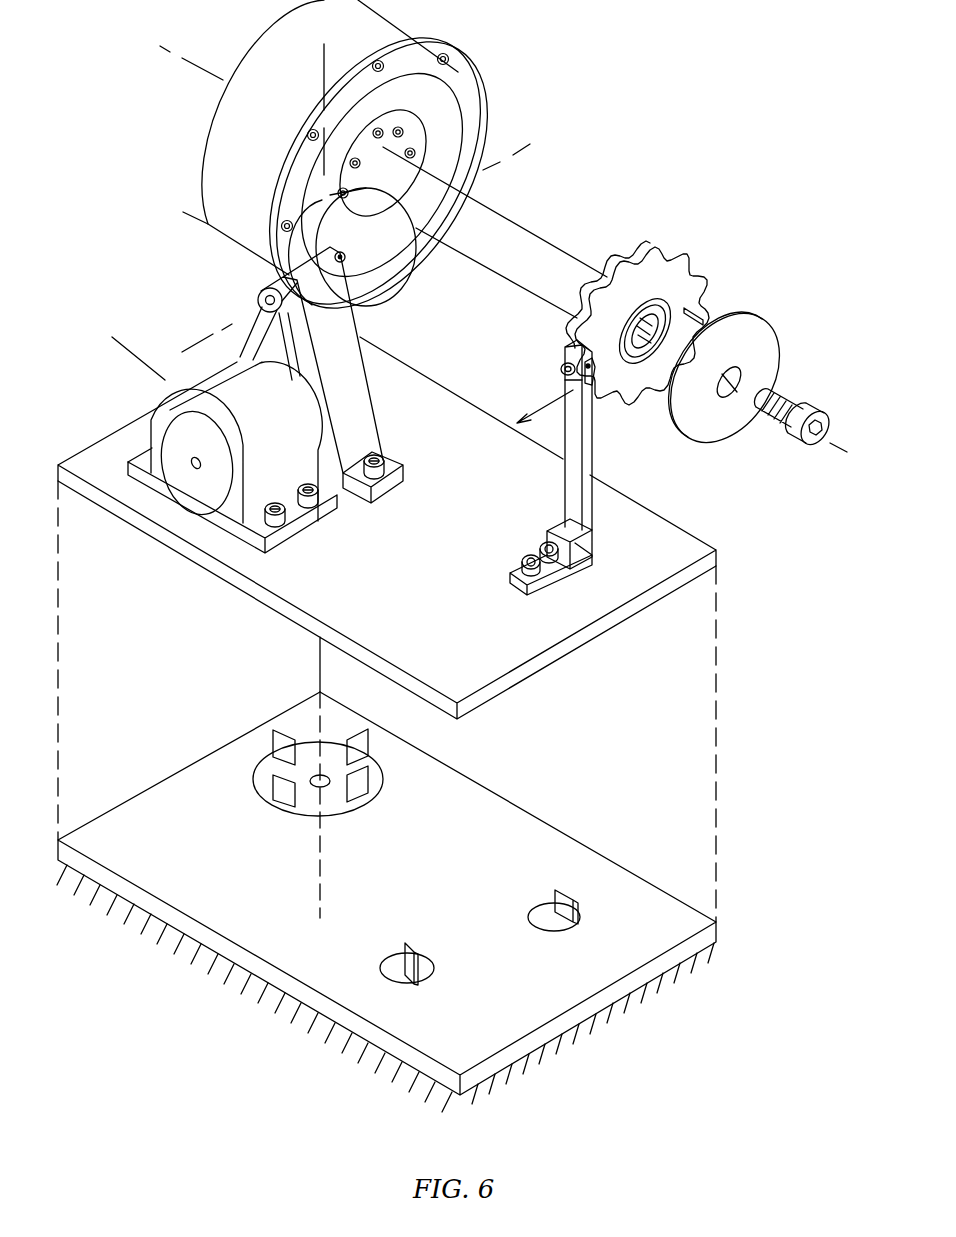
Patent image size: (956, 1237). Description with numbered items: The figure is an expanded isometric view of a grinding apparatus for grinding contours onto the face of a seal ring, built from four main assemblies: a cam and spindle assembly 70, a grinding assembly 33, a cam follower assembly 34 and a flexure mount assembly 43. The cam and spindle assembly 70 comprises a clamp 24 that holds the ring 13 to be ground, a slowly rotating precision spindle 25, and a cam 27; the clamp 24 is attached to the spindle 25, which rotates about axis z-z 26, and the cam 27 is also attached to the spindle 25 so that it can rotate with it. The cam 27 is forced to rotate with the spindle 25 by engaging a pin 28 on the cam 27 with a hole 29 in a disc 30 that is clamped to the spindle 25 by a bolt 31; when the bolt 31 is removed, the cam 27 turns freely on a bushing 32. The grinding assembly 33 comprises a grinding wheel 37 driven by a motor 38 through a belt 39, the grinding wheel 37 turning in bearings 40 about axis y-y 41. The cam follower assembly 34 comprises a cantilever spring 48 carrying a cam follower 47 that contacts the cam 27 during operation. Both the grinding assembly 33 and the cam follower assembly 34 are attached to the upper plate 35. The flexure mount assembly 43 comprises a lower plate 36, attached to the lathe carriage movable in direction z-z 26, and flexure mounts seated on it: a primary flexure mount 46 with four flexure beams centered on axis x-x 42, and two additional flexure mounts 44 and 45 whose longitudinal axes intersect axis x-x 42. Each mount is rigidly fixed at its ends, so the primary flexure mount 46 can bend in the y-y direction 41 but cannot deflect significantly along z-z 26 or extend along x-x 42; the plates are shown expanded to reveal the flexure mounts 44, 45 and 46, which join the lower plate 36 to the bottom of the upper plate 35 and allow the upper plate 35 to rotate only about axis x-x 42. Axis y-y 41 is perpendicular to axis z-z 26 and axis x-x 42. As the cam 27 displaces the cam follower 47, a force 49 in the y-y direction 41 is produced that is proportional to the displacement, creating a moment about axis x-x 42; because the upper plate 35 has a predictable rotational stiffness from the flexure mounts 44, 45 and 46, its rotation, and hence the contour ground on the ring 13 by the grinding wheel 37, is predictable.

The ring 13 is at (463, 113).
The clamp 24 is at (184, 210).
The spindle 25 is at (553, 268).
The axis z-z 26 is at (505, 251).
The cam 27 is at (667, 260).
The pin 28 is at (705, 322).
The hole 29 is at (768, 358).
The disc 30 is at (748, 313).
The bolt 31 is at (787, 430).
The bushing 32 is at (668, 313).
The grinding assembly 33 is at (124, 352).
The cam follower assembly 34 is at (603, 494).
The upper plate 35 is at (362, 600).
The lower plate 36 is at (215, 882).
The grinding wheel 37 is at (393, 263).
The motor 38 is at (158, 422).
The belt 39 is at (253, 323).
The bearings 40 is at (330, 277).
The axis y-y 41 is at (352, 241).
The axis x-x 42 is at (318, 476).
The flexure mount assembly 43 is at (545, 805).
The flexure mount 44 is at (567, 913).
The flexure mount 45 is at (418, 975).
The primary flexure mount 46 is at (358, 793).
The cam follower 47 is at (587, 373).
The cantilever spring 48 is at (573, 392).
The force 49 is at (539, 406).
The cam and spindle assembly 70 is at (232, 168).